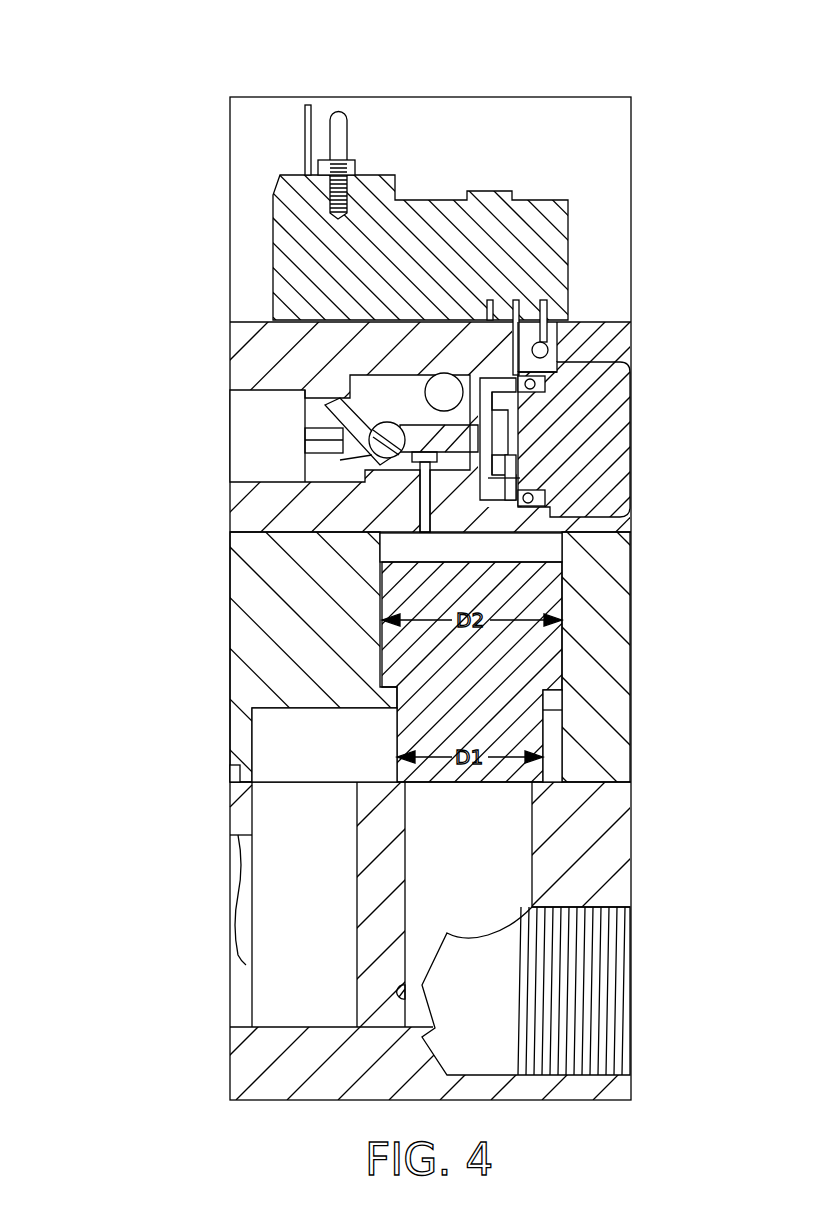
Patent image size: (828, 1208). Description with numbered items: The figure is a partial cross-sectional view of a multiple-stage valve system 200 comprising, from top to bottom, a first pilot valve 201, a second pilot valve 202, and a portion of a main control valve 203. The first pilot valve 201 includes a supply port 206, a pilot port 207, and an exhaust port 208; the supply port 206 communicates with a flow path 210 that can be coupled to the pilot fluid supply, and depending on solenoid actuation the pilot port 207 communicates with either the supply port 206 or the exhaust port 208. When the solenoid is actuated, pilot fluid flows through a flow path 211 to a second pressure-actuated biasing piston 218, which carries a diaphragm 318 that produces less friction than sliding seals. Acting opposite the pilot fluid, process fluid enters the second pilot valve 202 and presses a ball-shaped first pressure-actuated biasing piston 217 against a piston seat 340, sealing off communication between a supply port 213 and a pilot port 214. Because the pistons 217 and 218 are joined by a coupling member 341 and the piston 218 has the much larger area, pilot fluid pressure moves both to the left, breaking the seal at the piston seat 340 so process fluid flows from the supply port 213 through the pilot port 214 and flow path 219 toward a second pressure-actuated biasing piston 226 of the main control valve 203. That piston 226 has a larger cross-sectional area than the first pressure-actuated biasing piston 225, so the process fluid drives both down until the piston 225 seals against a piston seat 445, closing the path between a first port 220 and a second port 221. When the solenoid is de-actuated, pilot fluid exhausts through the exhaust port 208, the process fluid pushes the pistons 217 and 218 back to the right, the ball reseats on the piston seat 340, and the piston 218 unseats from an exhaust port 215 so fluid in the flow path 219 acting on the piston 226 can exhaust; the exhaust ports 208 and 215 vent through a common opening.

The multiple-stage valve system 200 is at (665, 74).
The first pilot valve 201 is at (541, 207).
The second pilot valve 202 is at (103, 323).
The main control valve 203 is at (175, 535).
The supply port 206 is at (543, 300).
The pilot port 207 is at (513, 300).
The exhaust port 208 is at (489, 300).
The flow path 210 is at (548, 352).
The flow path 211 is at (548, 375).
The supply port 213 is at (235, 418).
The pilot port 214 is at (403, 466).
The exhaust port 215 is at (440, 373).
The first pressure-actuated biasing piston 217 is at (372, 455).
The second pressure-actuated biasing piston 218 is at (510, 478).
The flow path 219 is at (425, 490).
The first port 220 is at (620, 963).
The second port 221 is at (278, 782).
The first pressure-actuated biasing piston 225 is at (486, 783).
The second pressure-actuated biasing piston 226 is at (395, 550).
The diaphragm 318 is at (520, 439).
The piston seat 340 is at (395, 430).
The coupling member 341 is at (420, 430).
The piston seat 445 is at (548, 780).